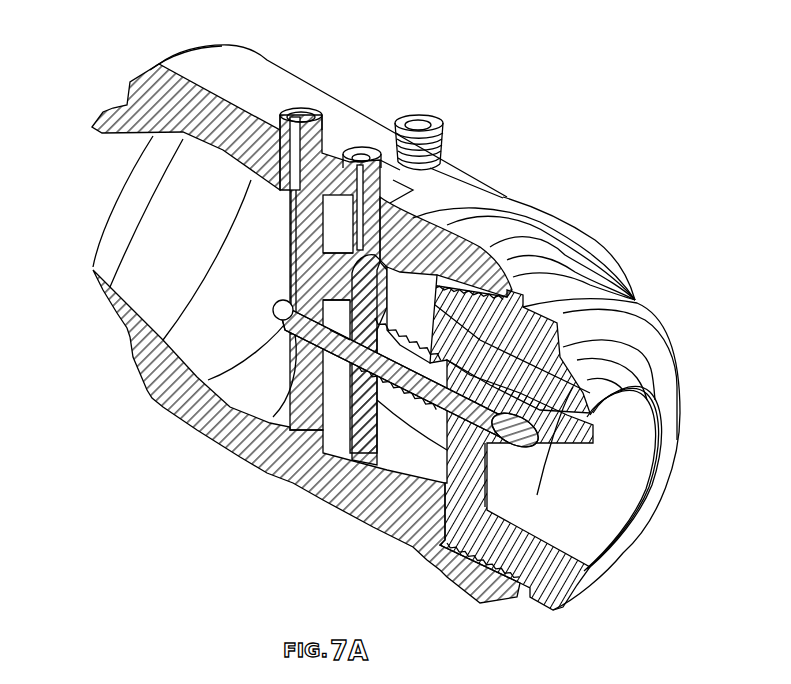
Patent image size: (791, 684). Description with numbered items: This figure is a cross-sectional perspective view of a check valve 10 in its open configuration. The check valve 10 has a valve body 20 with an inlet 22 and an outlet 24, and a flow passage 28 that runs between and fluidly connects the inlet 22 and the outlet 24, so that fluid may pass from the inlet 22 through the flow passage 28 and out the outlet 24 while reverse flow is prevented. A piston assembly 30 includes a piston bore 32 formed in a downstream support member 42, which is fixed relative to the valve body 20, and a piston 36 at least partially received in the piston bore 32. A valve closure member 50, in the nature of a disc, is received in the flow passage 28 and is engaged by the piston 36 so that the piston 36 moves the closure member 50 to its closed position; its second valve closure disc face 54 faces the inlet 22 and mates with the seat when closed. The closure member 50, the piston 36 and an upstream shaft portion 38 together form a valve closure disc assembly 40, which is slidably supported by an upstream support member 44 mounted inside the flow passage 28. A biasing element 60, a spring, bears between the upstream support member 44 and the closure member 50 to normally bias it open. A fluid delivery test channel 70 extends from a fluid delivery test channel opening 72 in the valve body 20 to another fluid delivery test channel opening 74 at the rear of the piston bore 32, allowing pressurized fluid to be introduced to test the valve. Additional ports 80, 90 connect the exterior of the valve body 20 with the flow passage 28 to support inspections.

The check valve 10 is at (540, 72).
The valve body 20 is at (578, 240).
The inlet 22 is at (636, 497).
The outlet 24 is at (108, 192).
The flow passage 28 is at (194, 276).
The piston assembly 30 is at (333, 380).
The piston bore 32 is at (300, 326).
The piston 36 is at (295, 362).
The upstream shaft portion 38 is at (528, 428).
The valve closure disc assembly 40 is at (383, 410).
The downstream support member 42 is at (296, 268).
The upstream support member 44 is at (485, 305).
The valve closure member 50 is at (408, 315).
The second valve closure disc face 54 is at (399, 362).
The biasing element 60 is at (413, 410).
The fluid delivery test channel 70 is at (291, 235).
The fluid delivery test channel opening 72 is at (298, 115).
The fluid delivery test channel opening 74 is at (274, 311).
The port 80 is at (423, 124).
The port 90 is at (362, 152).